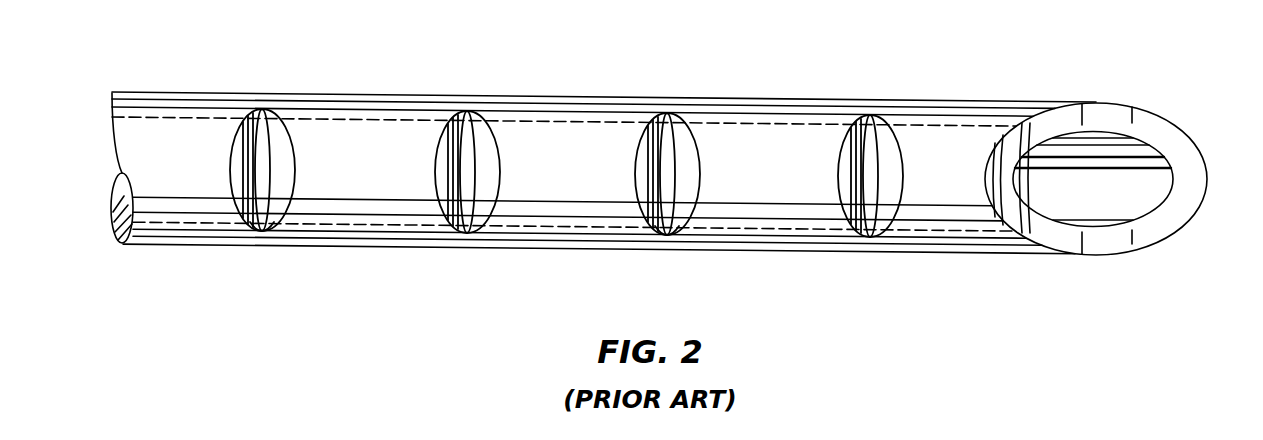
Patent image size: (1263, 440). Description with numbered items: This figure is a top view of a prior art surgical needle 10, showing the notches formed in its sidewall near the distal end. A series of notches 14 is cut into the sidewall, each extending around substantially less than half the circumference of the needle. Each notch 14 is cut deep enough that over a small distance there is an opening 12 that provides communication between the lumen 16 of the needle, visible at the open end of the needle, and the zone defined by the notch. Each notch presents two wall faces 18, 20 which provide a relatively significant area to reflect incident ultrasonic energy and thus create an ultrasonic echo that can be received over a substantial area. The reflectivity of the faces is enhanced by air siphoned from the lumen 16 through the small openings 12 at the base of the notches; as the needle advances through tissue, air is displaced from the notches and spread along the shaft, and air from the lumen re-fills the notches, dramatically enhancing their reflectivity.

The surgical needle 10 is at (707, 62).
The opening 12 is at (263, 163).
The notch 14 is at (270, 228).
The lumen 16 is at (1118, 158).
The wall face 18 is at (450, 163).
The wall face 20 is at (485, 157).